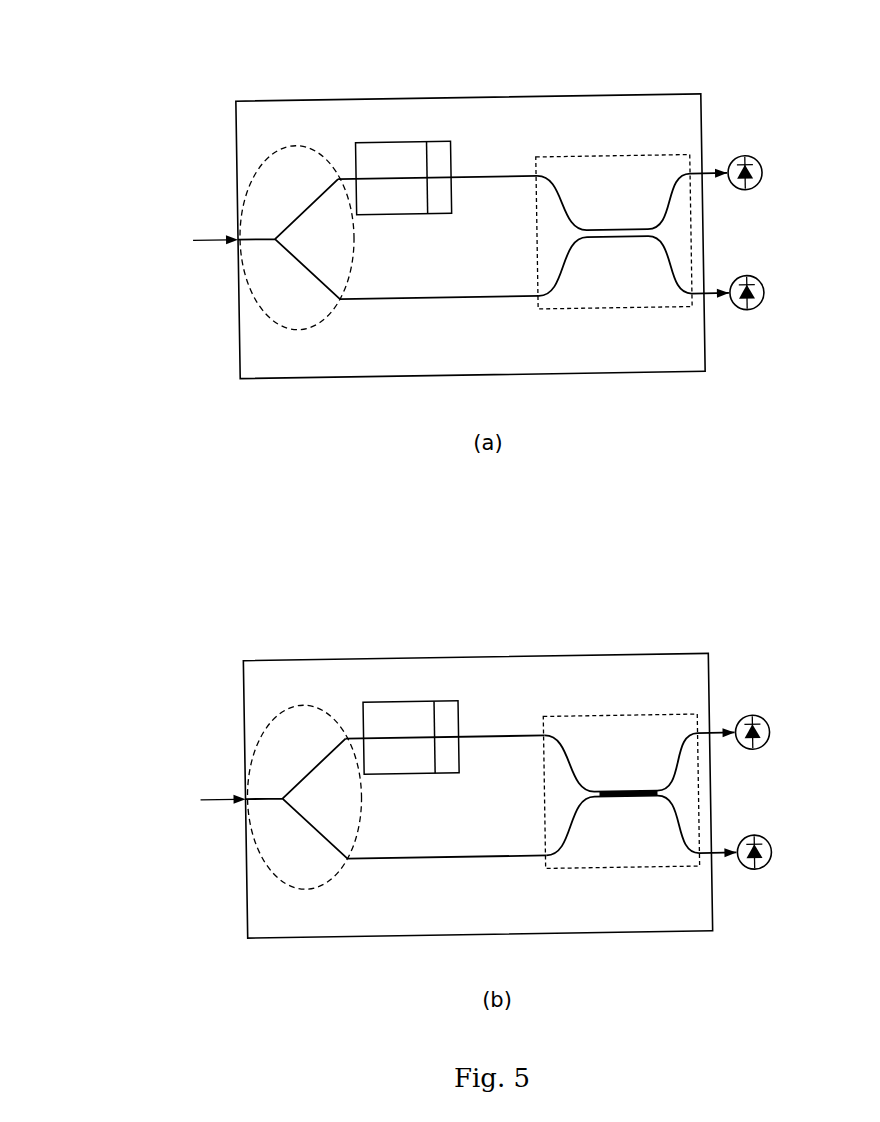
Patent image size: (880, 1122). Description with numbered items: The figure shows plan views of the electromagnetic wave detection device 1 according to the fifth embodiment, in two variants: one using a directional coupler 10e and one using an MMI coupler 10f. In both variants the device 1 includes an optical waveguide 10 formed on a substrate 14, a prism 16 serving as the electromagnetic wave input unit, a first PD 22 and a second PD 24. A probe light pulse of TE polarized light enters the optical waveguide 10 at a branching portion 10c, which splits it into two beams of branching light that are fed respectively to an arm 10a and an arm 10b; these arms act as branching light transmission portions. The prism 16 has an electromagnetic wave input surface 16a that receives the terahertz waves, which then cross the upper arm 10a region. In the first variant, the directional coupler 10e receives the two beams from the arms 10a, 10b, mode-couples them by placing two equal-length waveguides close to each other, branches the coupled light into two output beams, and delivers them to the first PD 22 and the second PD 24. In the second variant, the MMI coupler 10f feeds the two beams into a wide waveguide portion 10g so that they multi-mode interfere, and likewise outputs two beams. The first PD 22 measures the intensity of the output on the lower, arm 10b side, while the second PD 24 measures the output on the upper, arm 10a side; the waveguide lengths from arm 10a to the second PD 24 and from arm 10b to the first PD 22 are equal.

The electromagnetic wave detection device 1 is at (428, 474).
The optical waveguide 10 is at (487, 519).
The arm 10a is at (510, 176).
The arm 10b is at (445, 298).
The branching portion 10c is at (333, 312).
The directional coupler 10e is at (612, 310).
The MMI coupler 10f is at (640, 813).
The wide waveguide portion 10g is at (628, 817).
The substrate 14 is at (703, 344).
The prism 16 is at (415, 139).
The electromagnetic wave input surface 16a is at (372, 152).
The first PD 22 is at (757, 280).
The second PD 24 is at (757, 160).